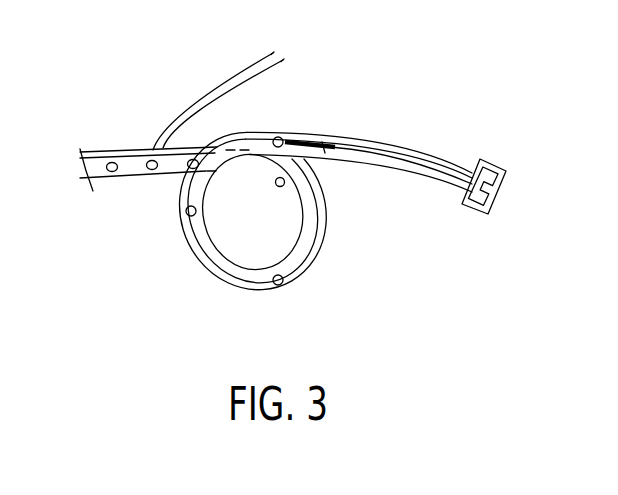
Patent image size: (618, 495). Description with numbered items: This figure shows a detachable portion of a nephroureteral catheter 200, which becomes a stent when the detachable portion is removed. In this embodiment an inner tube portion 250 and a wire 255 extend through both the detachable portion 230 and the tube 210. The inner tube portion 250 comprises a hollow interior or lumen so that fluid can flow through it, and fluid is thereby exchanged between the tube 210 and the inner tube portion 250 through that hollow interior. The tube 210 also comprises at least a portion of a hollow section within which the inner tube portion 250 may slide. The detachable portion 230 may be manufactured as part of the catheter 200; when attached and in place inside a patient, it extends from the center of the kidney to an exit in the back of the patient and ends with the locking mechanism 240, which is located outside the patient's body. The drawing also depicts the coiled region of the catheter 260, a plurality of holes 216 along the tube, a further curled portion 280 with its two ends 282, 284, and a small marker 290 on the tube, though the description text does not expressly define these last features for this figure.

The catheter 200 is at (105, 243).
The tube 210 is at (110, 152).
The apertures 216 is at (285, 281).
The detachable portion 230 is at (426, 153).
The locking mechanism 240 is at (485, 159).
The inner tube portion 250 is at (378, 152).
The wire 255 is at (299, 131).
The loop portion 260 is at (266, 293).
The auxiliary strap portion 280 is at (222, 84).
The first end of auxiliary strap 282 is at (275, 53).
The second end of auxiliary strap 284 is at (286, 61).
The stop 290 is at (325, 153).